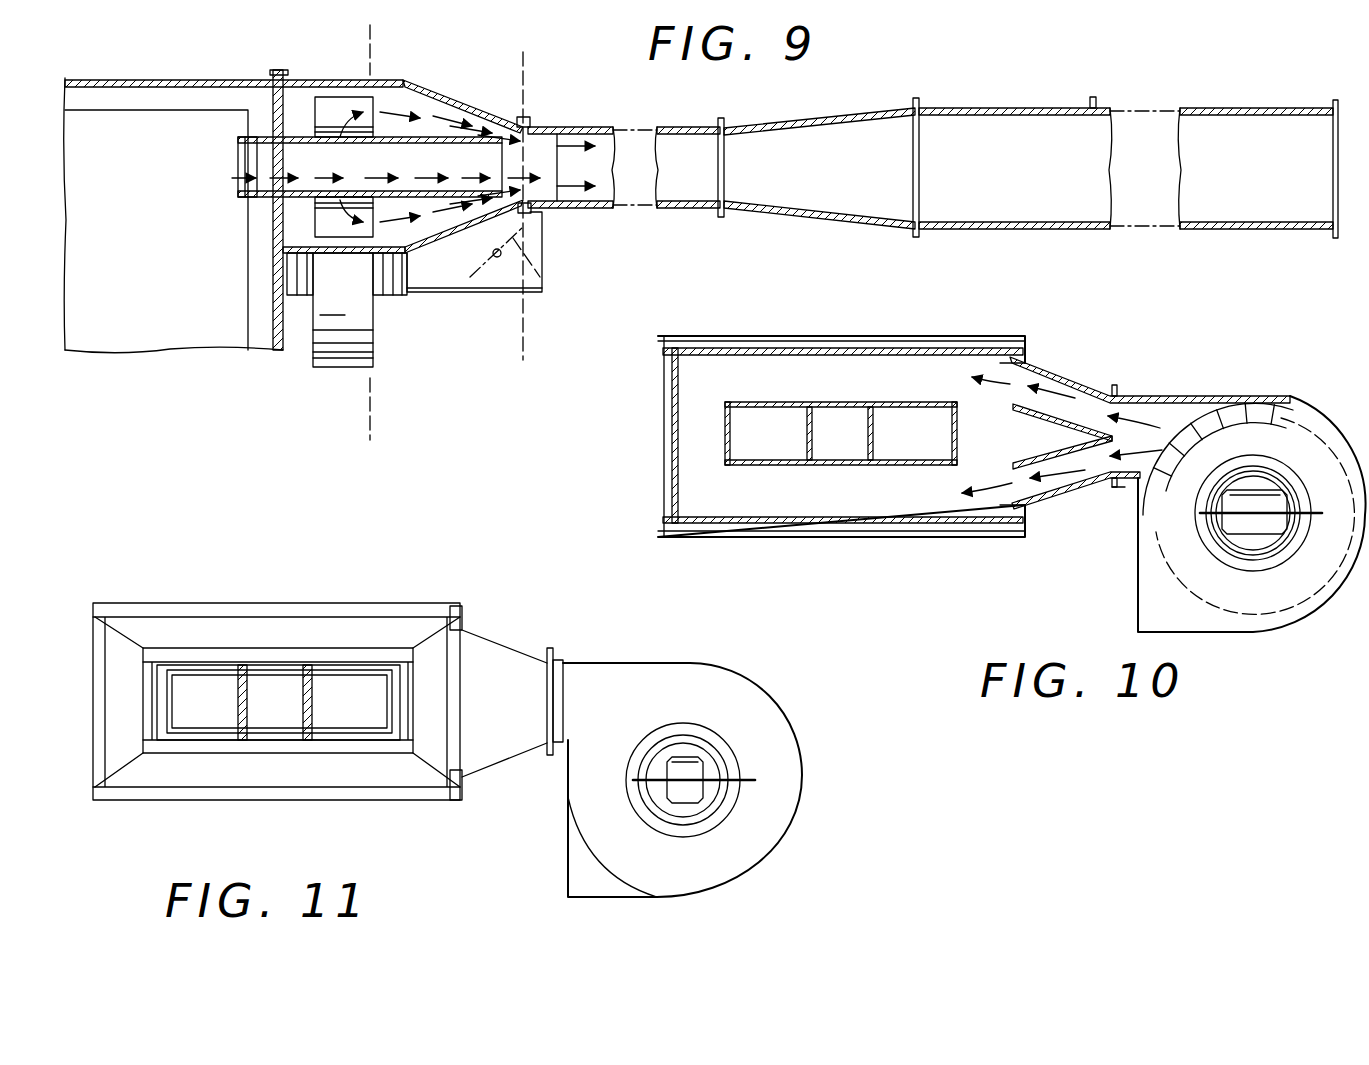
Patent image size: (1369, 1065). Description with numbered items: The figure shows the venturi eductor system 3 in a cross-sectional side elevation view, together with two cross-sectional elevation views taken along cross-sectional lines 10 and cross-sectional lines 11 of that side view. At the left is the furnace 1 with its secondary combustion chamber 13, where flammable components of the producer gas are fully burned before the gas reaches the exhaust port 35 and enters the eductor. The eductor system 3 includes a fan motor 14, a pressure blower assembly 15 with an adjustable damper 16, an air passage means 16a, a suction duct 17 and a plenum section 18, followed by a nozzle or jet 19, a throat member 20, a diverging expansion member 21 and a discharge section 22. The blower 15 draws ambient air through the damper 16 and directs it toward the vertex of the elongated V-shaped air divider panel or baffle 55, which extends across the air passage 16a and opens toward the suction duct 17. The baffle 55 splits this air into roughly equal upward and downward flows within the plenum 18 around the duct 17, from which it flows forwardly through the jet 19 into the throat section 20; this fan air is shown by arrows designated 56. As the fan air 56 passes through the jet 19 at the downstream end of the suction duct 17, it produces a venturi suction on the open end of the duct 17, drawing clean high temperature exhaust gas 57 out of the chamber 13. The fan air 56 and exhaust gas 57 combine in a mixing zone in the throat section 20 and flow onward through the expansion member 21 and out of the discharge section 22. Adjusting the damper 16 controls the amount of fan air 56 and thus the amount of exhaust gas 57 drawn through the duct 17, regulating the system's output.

In FIG. 9, the furnace 1 is at (202, 355).
In FIG. 9, the venturi eductor system 3 is at (755, 222).
In FIG. 10, the venturi eductor system 3 is at (646, 445).
In FIG. 11, the venturi eductor system 3 is at (386, 598).
In FIG. 9, the cross-sectional lines 10- 10 is at (344, 52).
In FIG. 9, the cross-sectional lines 11- 11 is at (570, 83).
In FIG. 10, the cross-sectional lines 11- 11 is at (1143, 388).
In FIG. 11, the cross-sectional lines 11- 11 is at (582, 660).
In FIG. 9, the secondary combustion chamber 13 is at (160, 170).
In FIG. 9, the fan motor 14 is at (290, 297).
In FIG. 9, the pressure blower assembly 15 is at (333, 353).
In FIG. 10, the pressure blower assembly 15 is at (1318, 435).
In FIG. 11, the pressure blower assembly 15 is at (773, 722).
In FIG. 9, the adjustable damper 16 is at (542, 279).
In FIG. 10, the adjustable damper 16 is at (1237, 530).
In FIG. 11, the adjustable damper 16 is at (700, 748).
In FIG. 10, the air passage means 16a is at (1058, 503).
In FIG. 11, the air passage means 16a is at (498, 762).
In FIG. 9, the suction duct 17 is at (473, 147).
In FIG. 10, the suction duct 17 is at (858, 452).
In FIG. 11, the suction duct 17 is at (360, 722).
In FIG. 9, the plenum section 18 is at (418, 100).
In FIG. 10, the plenum section 18 is at (977, 360).
In FIG. 9, the nozzle or jet 19 is at (533, 132).
In FIG. 9, the throat member 20 is at (668, 128).
In FIG. 9, the diverging expansion member 21 is at (800, 130).
In FIG. 9, the discharge section 22 is at (1000, 108).
In FIG. 9, the exhaust port 35 is at (255, 166).
In FIG. 10, the V-shaped air divider panel or baffle 55 is at (1040, 416).
In FIG. 9, the fan air 56 is at (445, 123).
In FIG. 10, the fan air 56 is at (1010, 488).
In FIG. 9, the exhaust gas 57 is at (343, 175).